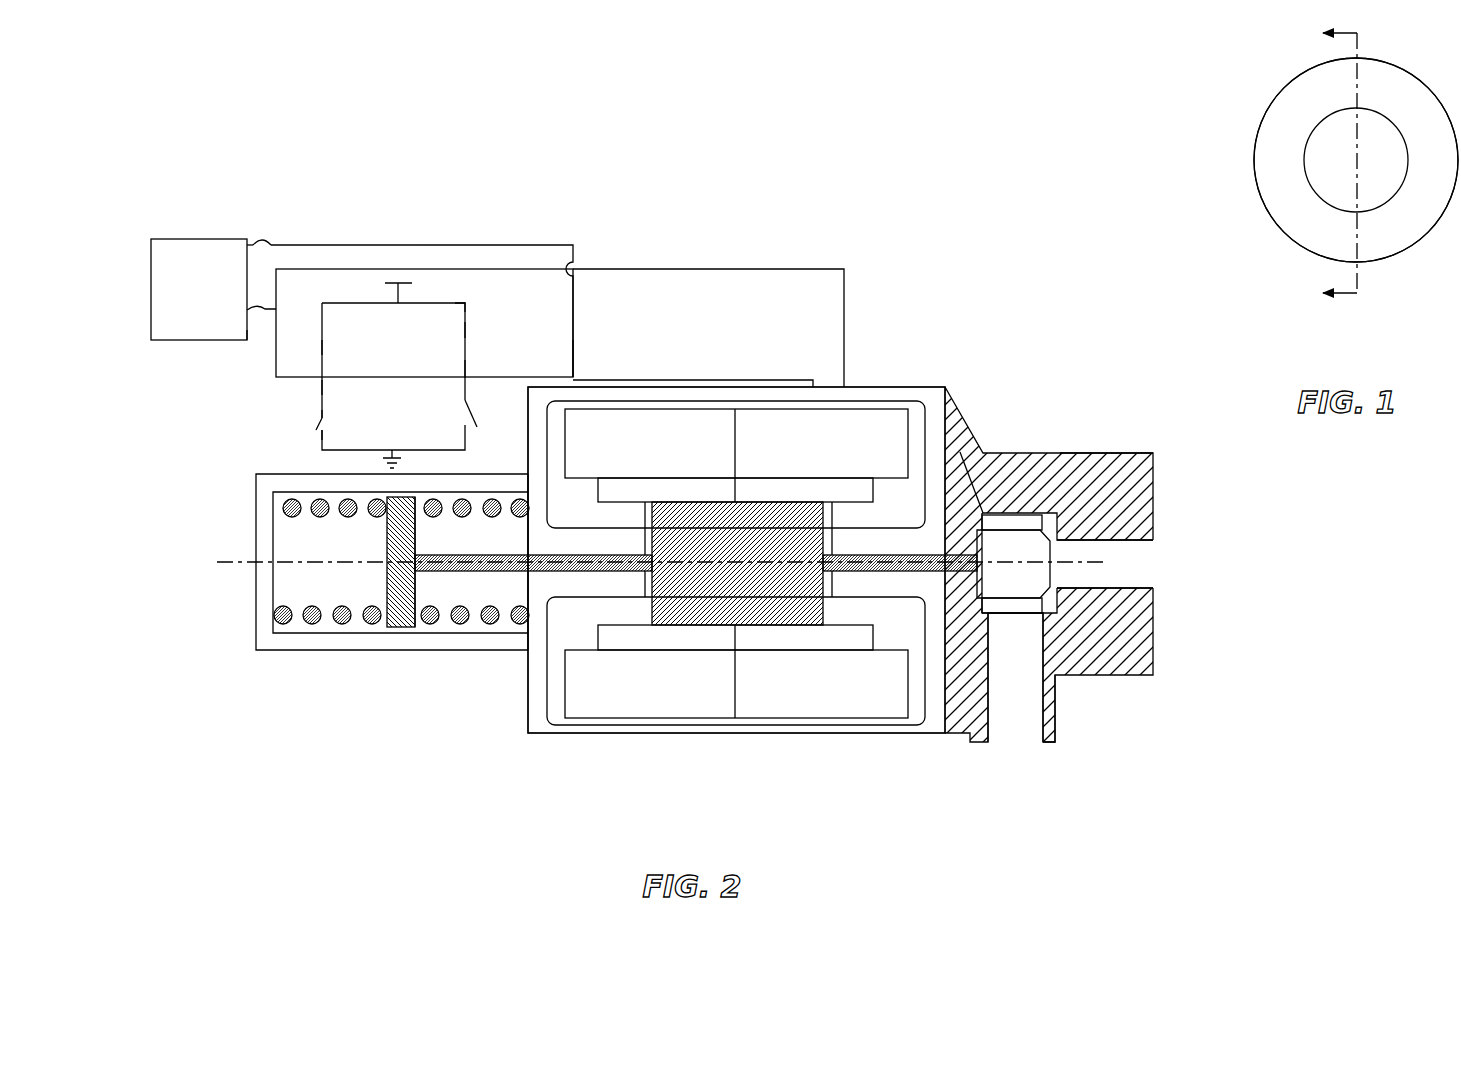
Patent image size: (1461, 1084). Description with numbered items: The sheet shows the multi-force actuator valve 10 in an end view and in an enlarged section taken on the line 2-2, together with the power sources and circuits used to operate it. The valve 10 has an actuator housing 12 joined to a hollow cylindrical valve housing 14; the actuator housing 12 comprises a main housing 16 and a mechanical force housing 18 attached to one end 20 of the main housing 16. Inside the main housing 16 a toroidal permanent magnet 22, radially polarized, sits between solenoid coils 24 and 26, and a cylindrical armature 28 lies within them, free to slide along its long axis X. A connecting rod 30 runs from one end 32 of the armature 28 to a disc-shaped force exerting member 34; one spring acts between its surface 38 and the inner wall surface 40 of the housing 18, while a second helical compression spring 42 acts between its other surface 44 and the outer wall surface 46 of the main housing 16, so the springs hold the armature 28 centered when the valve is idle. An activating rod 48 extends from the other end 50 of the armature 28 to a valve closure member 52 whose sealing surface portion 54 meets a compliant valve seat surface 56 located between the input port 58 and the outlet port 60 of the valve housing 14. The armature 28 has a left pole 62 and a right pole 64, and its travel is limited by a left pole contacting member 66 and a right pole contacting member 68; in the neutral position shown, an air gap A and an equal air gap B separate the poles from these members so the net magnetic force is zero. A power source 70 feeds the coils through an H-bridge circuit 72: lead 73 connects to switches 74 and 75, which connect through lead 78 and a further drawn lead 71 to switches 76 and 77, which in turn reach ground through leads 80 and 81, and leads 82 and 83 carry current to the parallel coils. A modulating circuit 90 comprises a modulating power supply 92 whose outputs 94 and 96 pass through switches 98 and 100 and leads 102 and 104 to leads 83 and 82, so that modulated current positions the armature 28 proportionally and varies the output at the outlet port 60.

In FIG. 1, the multi-force actuator valve 10 is at (1268, 90).
In FIG. 2, the multi-force actuator valve 10 is at (852, 342).
In FIG. 1, the actuator housing 12 is at (1270, 215).
In FIG. 2, the actuator housing 12 is at (517, 743).
In FIG. 2, the valve housing 14 is at (963, 450).
In FIG. 2, the main housing 16 is at (668, 733).
In FIG. 1, the mechanical force housing 18 is at (1368, 171).
In FIG. 2, the mechanical force housing 18 is at (256, 525).
In FIG. 2, the end of main housing 20 is at (528, 722).
In FIG. 2, the permanent magnet 22 is at (773, 722).
In FIG. 2, the solenoid coil 24 is at (947, 390).
In FIG. 2, the solenoid coil 26 is at (718, 693).
In FIG. 2, the armature 28 is at (793, 600).
In FIG. 2, the connecting rod 30 is at (450, 555).
In FIG. 2, the end of armature 32 is at (638, 580).
In FIG. 2, the force exerting member 34 is at (405, 615).
In FIG. 2, the surface of force exerting member 38 is at (387, 585).
In FIG. 2, the inner wall surface 40 is at (273, 585).
In FIG. 2, the helical compression spring 42 is at (490, 606).
In FIG. 2, the surface of force exerting member 44 is at (410, 615).
In FIG. 2, the outer wall surface 46 is at (528, 580).
In FIG. 2, the activating rod 48 is at (967, 567).
In FIG. 2, the end of armature 50 is at (807, 613).
In FIG. 2, the valve closure member 52 is at (990, 543).
In FIG. 2, the valve sealing surface portion 54 is at (1053, 593).
In FIG. 2, the valve seat surface 56 is at (1140, 458).
In FIG. 2, the input port 58 is at (1137, 542).
In FIG. 2, the outlet port 60 is at (1047, 733).
In FIG. 2, the left pole 62 is at (675, 620).
In FIG. 2, the right pole 64 is at (818, 512).
In FIG. 2, the left pole contacting member 66 is at (602, 580).
In FIG. 2, the right pole contacting member 68 is at (882, 515).
In FIG. 2, the electrical power source 70 is at (410, 277).
In FIG. 2, the output line 71 is at (460, 370).
In FIG. 2, the H-bridge circuit 72 is at (478, 337).
In FIG. 2, the lead 73 is at (467, 303).
In FIG. 2, the electrical switch 74 is at (312, 350).
In FIG. 2, the electrical switch 75 is at (460, 330).
In FIG. 2, the electrical switch 76 is at (312, 420).
In FIG. 2, the electrical switch 77 is at (465, 402).
In FIG. 2, the electrically conductive lead 78 is at (322, 387).
In FIG. 2, the electrically conductive lead 80 is at (320, 428).
In FIG. 2, the electrically conductive lead 81 is at (477, 442).
In FIG. 2, the electrically conductive lead 82 is at (657, 268).
In FIG. 2, the electrically conductive lead 83 is at (573, 376).
In FIG. 2, the modulating circuit 90 is at (185, 403).
In FIG. 2, the modulating power supply 92 is at (155, 238).
In FIG. 2, the electrical output 94 is at (250, 240).
In FIG. 2, the electrical output 96 is at (248, 342).
In FIG. 2, the switch 98 is at (265, 238).
In FIG. 2, the switch 100 is at (272, 307).
In FIG. 2, the electrically conductive lead 102 is at (358, 245).
In FIG. 2, the electrically conductive lead 104 is at (273, 312).
In FIG. 2, the air gap A is at (643, 613).
In FIG. 2, the air gap B is at (833, 617).
In FIG. 2, the long axis X is at (240, 565).
In FIG. 1, the section line 2 is at (1329, 167).